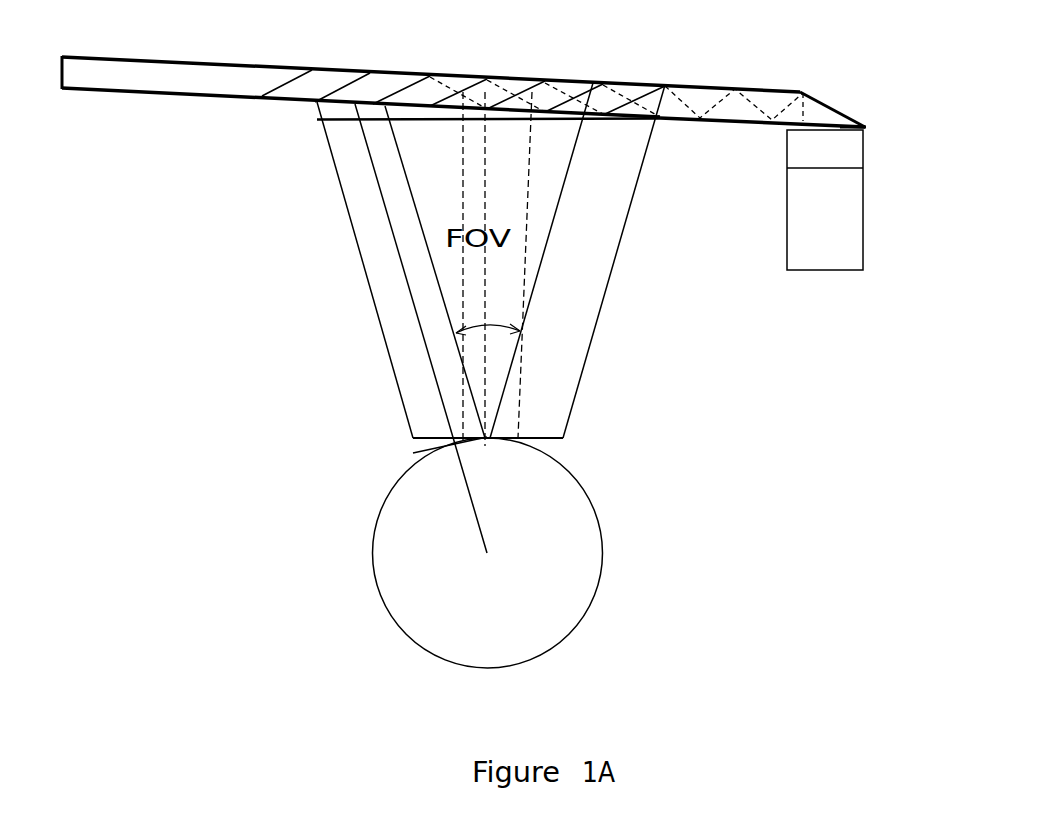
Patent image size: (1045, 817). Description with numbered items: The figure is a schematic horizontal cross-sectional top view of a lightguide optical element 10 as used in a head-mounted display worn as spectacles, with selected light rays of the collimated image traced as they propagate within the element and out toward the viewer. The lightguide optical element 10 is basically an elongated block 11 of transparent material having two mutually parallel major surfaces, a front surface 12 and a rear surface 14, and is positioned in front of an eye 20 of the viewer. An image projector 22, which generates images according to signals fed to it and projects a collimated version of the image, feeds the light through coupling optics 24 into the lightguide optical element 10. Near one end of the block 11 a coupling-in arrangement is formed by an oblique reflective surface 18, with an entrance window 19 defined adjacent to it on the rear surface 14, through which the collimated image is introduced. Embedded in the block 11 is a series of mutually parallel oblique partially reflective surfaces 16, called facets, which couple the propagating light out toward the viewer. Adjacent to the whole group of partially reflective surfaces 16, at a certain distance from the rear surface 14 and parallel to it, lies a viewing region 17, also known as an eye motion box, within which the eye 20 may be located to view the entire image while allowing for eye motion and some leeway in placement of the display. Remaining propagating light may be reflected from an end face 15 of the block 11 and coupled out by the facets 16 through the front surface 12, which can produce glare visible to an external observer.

The lightguide optical element 10 is at (801, 58).
The elongated block 11 is at (210, 63).
The front surface 12 is at (265, 67).
The rear surface 14 is at (221, 92).
The end face 15 is at (60, 68).
The partially reflective surfaces 16 is at (398, 88).
The viewing region 17 is at (412, 438).
The oblique reflective surface 18 is at (838, 112).
The entrance window 19 is at (868, 127).
The eye 20 is at (603, 533).
The image projector 22 is at (866, 229).
The coupling optics 24 is at (866, 154).